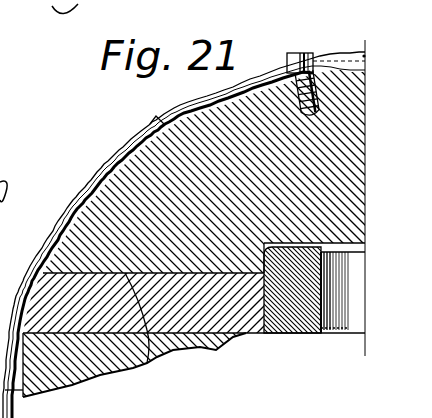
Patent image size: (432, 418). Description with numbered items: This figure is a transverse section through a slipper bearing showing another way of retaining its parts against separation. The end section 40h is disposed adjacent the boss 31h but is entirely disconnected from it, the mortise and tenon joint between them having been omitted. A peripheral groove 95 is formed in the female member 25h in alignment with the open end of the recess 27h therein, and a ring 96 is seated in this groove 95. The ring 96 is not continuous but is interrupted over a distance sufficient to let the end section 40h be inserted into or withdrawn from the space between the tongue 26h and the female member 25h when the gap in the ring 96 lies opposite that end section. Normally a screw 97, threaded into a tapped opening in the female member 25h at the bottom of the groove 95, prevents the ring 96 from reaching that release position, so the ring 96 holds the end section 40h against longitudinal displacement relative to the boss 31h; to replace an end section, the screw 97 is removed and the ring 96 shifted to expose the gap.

The peripheral groove 95 is at (190, 110).
The ring 96 is at (82, 188).
The screw 97 is at (306, 53).
The female member 25h is at (143, 158).
The tongue 26h is at (93, 367).
The recess 27h is at (138, 367).
The end section 40h is at (193, 320).
The boss 31h is at (299, 327).